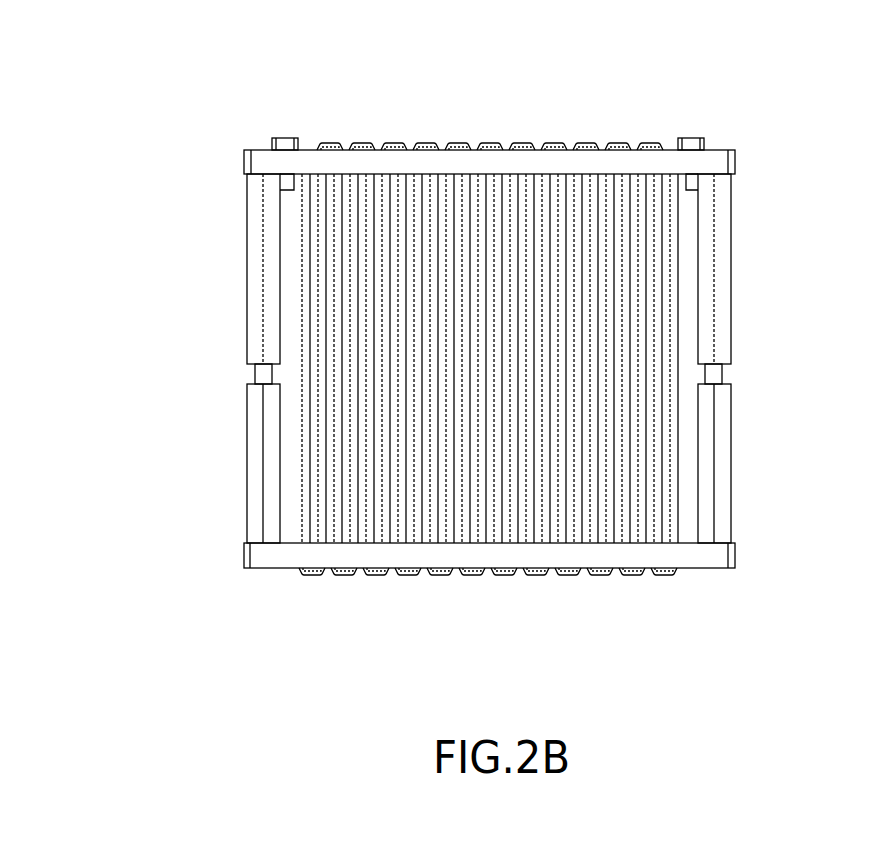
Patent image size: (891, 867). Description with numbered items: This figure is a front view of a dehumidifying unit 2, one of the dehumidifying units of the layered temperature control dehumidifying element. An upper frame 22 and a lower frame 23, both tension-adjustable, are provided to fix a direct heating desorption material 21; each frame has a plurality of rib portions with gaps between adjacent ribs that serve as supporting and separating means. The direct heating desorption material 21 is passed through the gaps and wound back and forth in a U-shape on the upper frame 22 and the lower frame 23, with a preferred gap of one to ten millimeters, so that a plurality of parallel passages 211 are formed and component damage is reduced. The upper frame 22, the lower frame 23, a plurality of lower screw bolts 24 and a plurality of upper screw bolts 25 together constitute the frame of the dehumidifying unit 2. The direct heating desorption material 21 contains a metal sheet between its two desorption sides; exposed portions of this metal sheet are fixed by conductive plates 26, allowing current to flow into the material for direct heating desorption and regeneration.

The dehumidifying unit 2 is at (362, 70).
The direct heating desorption material 21 is at (305, 270).
The parallel passages 211 is at (314, 306).
The upper frame 22 is at (720, 166).
The lower frame 23 is at (722, 556).
The lower screw bolts 24 is at (253, 426).
The upper screw bolts 25 is at (253, 213).
The conductive plates 26 is at (290, 140).